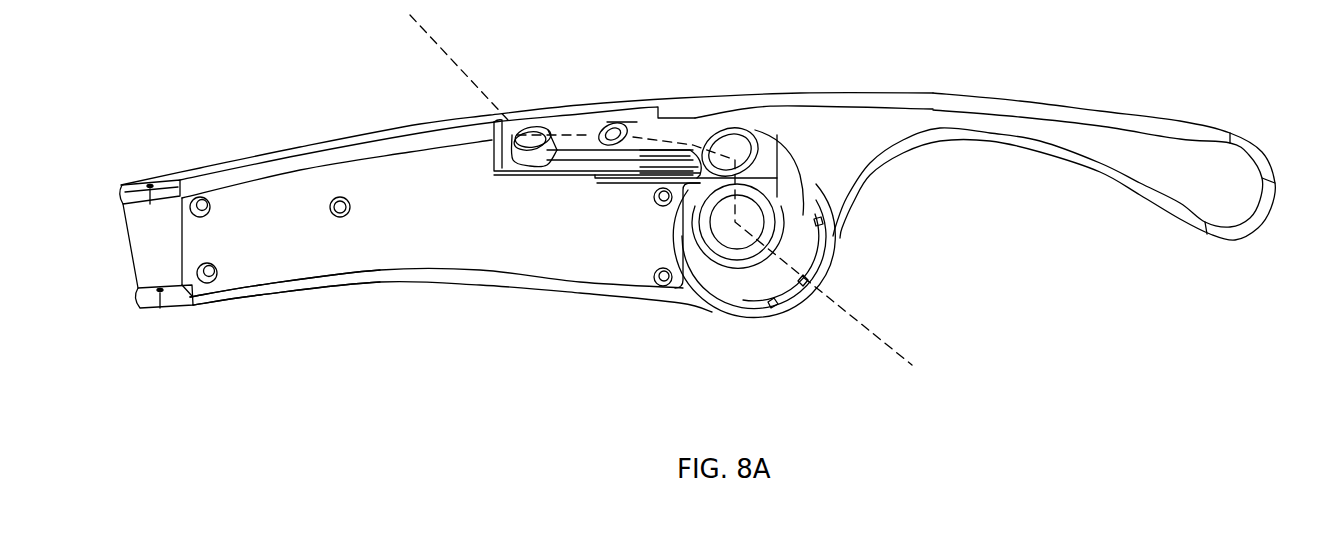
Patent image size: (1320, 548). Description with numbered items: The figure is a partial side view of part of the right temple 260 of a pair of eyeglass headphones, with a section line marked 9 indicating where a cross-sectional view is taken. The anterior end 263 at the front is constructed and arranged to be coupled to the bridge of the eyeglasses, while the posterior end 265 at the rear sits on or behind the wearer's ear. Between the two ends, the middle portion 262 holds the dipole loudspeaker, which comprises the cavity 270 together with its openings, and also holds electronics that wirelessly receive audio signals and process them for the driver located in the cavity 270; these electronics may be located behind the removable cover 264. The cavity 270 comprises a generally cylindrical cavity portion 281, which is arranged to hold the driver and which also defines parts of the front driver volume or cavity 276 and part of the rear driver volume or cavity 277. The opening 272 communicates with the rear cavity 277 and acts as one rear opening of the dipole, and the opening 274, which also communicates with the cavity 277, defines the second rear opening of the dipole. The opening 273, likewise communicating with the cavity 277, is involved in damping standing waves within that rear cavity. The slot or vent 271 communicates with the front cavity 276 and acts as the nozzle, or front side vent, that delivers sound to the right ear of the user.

The right temple 260 is at (774, 64).
The middle portion 262 is at (320, 145).
The anterior end 263 is at (132, 183).
The removable cover 264 is at (345, 283).
The posterior end 265 is at (1237, 239).
The cavity 270 is at (585, 173).
The slot or vent 271 is at (817, 268).
The opening 272 is at (743, 137).
The opening 273 is at (615, 126).
The opening 274 is at (543, 130).
The front driver volume or cavity 276 is at (747, 283).
The rear driver volume or cavity 277 is at (687, 132).
The generally cylindrical cavity portion 281 is at (807, 223).
The section line 9- 9 is at (440, 15).